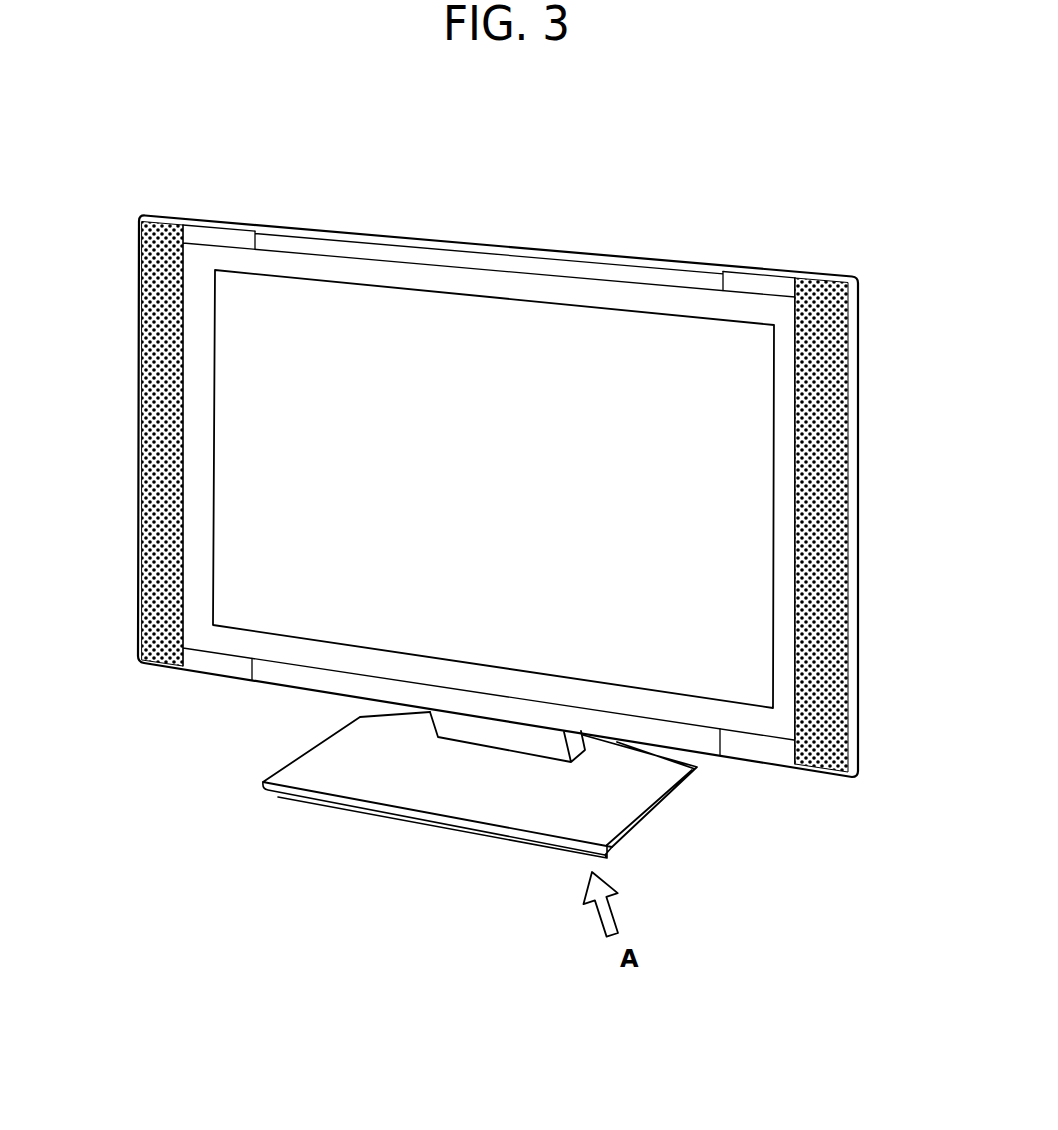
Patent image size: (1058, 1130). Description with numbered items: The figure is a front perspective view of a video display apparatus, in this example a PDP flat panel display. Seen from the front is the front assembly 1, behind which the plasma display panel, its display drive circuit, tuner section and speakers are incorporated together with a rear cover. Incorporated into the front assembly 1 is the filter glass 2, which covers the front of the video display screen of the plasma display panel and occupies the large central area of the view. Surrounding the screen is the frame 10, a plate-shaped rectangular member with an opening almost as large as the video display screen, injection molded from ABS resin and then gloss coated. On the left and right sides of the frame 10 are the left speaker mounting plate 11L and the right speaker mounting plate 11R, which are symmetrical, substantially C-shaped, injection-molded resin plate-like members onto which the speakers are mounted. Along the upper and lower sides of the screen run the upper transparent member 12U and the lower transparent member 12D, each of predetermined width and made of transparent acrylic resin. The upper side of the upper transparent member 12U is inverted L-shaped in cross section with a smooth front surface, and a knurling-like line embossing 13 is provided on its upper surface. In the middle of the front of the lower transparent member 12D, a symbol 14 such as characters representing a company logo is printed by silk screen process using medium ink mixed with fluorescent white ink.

The front assembly 1 is at (500, 496).
The filter glass 2 is at (725, 572).
The frame 10 is at (783, 403).
The left speaker mounting plate 11L is at (137, 452).
The right speaker mounting plate 11R is at (855, 498).
The upper transparent member 12U is at (487, 258).
The lower transparent member 12D is at (697, 740).
The knurling-like line embossing 13 is at (394, 235).
The symbol 14 is at (497, 723).